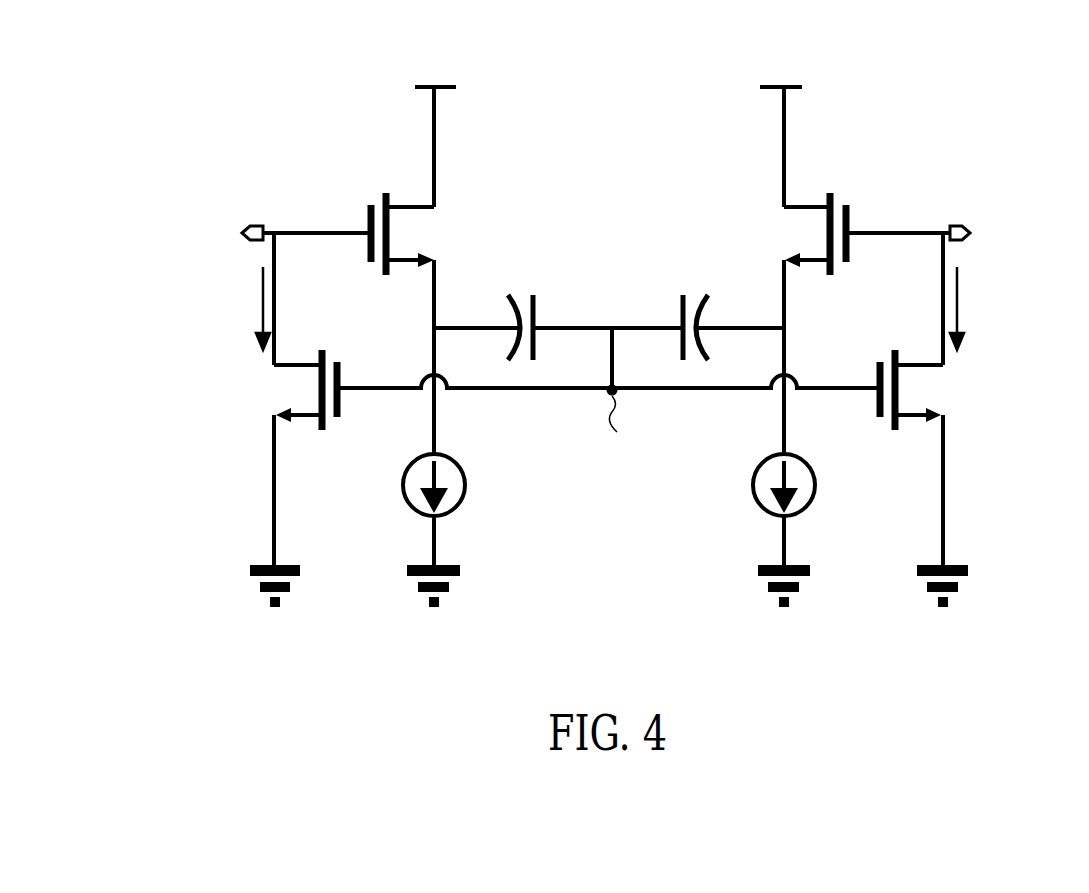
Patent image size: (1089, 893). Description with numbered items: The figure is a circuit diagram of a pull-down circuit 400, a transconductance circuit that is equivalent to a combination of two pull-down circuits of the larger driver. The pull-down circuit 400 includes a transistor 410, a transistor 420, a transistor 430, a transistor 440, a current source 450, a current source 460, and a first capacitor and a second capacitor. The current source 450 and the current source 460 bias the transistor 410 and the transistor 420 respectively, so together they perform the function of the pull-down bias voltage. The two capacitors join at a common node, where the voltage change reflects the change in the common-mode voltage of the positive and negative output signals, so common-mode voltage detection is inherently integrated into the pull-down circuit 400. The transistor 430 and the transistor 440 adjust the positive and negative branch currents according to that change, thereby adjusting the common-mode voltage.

The pull-down circuit 400 is at (102, 80).
The transistor 410 is at (359, 200).
The transistor 420 is at (858, 200).
The transistor 430 is at (260, 394).
The transistor 440 is at (959, 394).
The current source 450 is at (466, 485).
The current source 460 is at (752, 485).